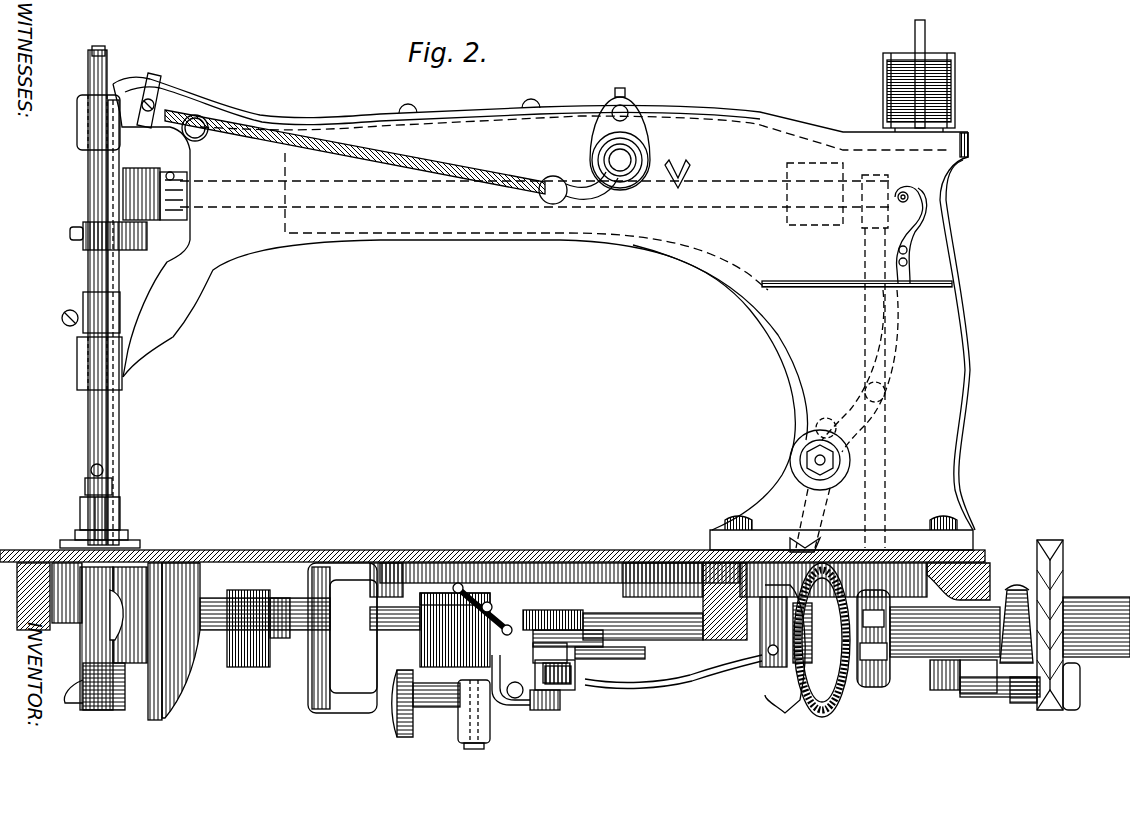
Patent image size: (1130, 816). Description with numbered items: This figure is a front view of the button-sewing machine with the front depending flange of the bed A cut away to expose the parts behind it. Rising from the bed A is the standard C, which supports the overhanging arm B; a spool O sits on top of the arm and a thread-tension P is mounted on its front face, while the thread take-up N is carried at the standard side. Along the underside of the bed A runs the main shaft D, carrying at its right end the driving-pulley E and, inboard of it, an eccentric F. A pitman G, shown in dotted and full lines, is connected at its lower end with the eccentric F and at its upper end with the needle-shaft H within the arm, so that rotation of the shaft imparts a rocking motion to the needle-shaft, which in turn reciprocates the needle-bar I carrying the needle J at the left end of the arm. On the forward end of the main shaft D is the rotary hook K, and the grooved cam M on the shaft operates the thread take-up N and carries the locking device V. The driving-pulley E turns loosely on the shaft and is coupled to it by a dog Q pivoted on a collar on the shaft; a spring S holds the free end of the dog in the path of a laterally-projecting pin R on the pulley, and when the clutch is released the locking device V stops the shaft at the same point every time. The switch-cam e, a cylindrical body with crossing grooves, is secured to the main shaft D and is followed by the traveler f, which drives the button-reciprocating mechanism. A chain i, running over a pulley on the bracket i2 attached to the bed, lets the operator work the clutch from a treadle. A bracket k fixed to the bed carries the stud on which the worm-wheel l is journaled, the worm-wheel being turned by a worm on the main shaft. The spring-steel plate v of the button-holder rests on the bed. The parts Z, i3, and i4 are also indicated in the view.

The bed A is at (502, 548).
The overhanging arm B is at (540, 303).
The standard C is at (842, 341).
The main shaft D is at (430, 630).
The driving-pulley E is at (1063, 558).
The eccentric F is at (888, 672).
The pitman G is at (880, 445).
The needle-shaft H is at (722, 175).
The needle-bar I is at (90, 410).
The needle J is at (95, 503).
The rotary hook K is at (80, 638).
The bracket k is at (548, 710).
The worm-wheel l is at (560, 600).
The grooved cam M is at (812, 717).
The thread take-up N is at (905, 276).
The spool O is at (960, 90).
The thread-tension P is at (635, 153).
The dog Q is at (990, 695).
The pin R is at (1022, 703).
The spring S is at (1003, 600).
The locking device V is at (760, 668).
The spring-steel plate v is at (672, 683).
The shuttle driver Z is at (112, 660).
The switch-cam e is at (454, 624).
The traveler f is at (452, 700).
The chain i is at (430, 730).
The bracket i2 is at (312, 668).
The block i3 is at (570, 690).
The bracket arm i4 is at (515, 703).